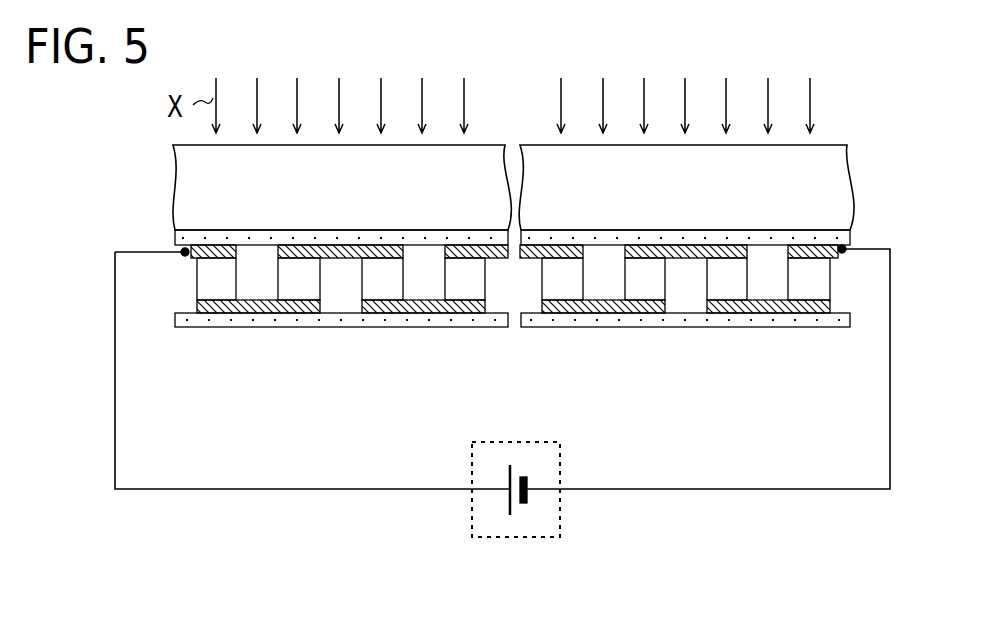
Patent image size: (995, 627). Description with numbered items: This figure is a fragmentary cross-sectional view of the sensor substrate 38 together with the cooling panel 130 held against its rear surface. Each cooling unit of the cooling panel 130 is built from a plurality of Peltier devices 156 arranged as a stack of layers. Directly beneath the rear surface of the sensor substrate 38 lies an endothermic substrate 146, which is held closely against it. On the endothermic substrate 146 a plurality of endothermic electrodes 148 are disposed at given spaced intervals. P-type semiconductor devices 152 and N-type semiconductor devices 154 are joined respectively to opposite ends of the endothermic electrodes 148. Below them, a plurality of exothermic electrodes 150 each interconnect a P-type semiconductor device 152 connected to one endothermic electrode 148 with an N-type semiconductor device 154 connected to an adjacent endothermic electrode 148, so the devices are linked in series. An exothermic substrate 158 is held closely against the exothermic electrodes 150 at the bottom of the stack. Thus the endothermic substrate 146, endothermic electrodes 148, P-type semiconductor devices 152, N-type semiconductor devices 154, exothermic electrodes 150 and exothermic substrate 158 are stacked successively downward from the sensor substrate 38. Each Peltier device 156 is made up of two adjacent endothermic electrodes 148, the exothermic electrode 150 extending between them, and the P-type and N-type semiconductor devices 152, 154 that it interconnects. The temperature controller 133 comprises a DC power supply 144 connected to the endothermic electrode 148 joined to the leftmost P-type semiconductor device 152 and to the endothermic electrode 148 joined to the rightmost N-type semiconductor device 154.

The sensor substrate 38 is at (192, 192).
The endothermic substrate 146 is at (178, 240).
The endothermic electrodes 148 is at (207, 251).
The P-type semiconductor devices 152 is at (197, 285).
The N-type semiconductor devices 154 is at (320, 283).
The exothermic electrodes 150 is at (257, 312).
The exothermic substrate 158 is at (468, 325).
The Peltier devices 156 is at (181, 311).
The cooling panel 130 is at (223, 419).
The DC power supply 144 is at (517, 475).
The temperature controller 133 is at (566, 518).